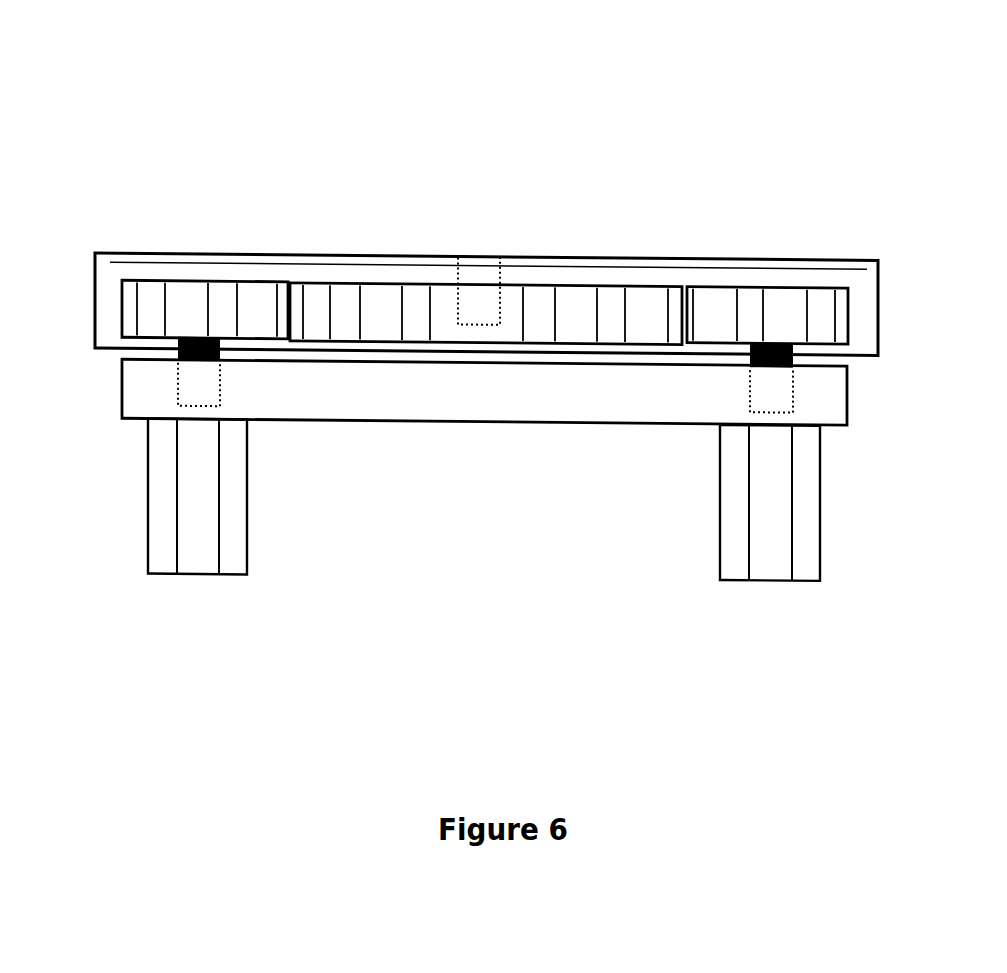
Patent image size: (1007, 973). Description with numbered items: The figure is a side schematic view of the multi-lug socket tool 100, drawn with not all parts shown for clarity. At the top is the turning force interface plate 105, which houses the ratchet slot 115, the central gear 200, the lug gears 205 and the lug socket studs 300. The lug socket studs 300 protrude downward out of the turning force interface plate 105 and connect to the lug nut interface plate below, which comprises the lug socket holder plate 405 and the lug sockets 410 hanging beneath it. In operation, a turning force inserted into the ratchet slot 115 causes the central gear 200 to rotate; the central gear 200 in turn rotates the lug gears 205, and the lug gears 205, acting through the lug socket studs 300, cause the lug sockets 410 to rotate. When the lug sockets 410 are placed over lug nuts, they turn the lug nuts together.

The multi-lug socket tool 100 is at (488, 88).
The turning force interface plate 105 is at (333, 253).
The ratchet slot 115 is at (468, 268).
The central gear 200 is at (587, 283).
The lug gears 205 is at (179, 280).
The lug socket studs 300 is at (178, 352).
The lug socket holder plate 405 is at (492, 414).
The lug sockets 410 is at (247, 543).